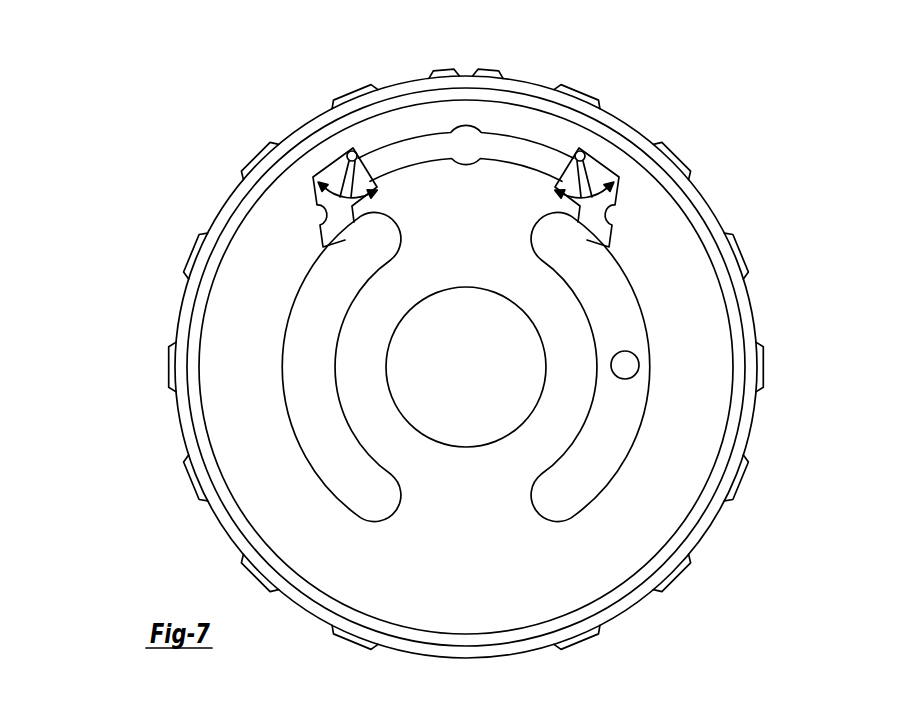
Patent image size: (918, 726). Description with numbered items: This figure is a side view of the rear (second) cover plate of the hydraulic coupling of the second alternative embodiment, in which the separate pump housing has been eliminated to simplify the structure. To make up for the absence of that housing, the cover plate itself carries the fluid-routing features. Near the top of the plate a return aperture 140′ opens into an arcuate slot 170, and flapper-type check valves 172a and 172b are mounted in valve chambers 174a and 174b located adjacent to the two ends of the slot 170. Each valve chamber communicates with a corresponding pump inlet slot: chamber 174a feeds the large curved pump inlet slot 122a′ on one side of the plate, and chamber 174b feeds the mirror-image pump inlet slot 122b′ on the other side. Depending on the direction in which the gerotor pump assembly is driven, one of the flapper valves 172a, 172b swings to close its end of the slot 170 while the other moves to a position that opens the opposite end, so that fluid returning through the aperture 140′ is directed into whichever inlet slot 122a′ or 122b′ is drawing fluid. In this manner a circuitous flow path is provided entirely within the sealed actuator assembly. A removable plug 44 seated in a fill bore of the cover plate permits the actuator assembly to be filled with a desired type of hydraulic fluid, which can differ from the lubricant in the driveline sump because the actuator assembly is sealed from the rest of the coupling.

The removable plug 44 is at (628, 370).
The pump inlet slot 122a′ is at (317, 297).
The pump inlet slot 122b′ is at (612, 288).
The return aperture 140′ is at (467, 148).
The arcuate slot 170 is at (412, 150).
The flapper-type check valve 172a is at (333, 163).
The flapper-type check valve 172b is at (603, 168).
The valve chamber 174a is at (318, 206).
The valve chamber 174b is at (610, 224).